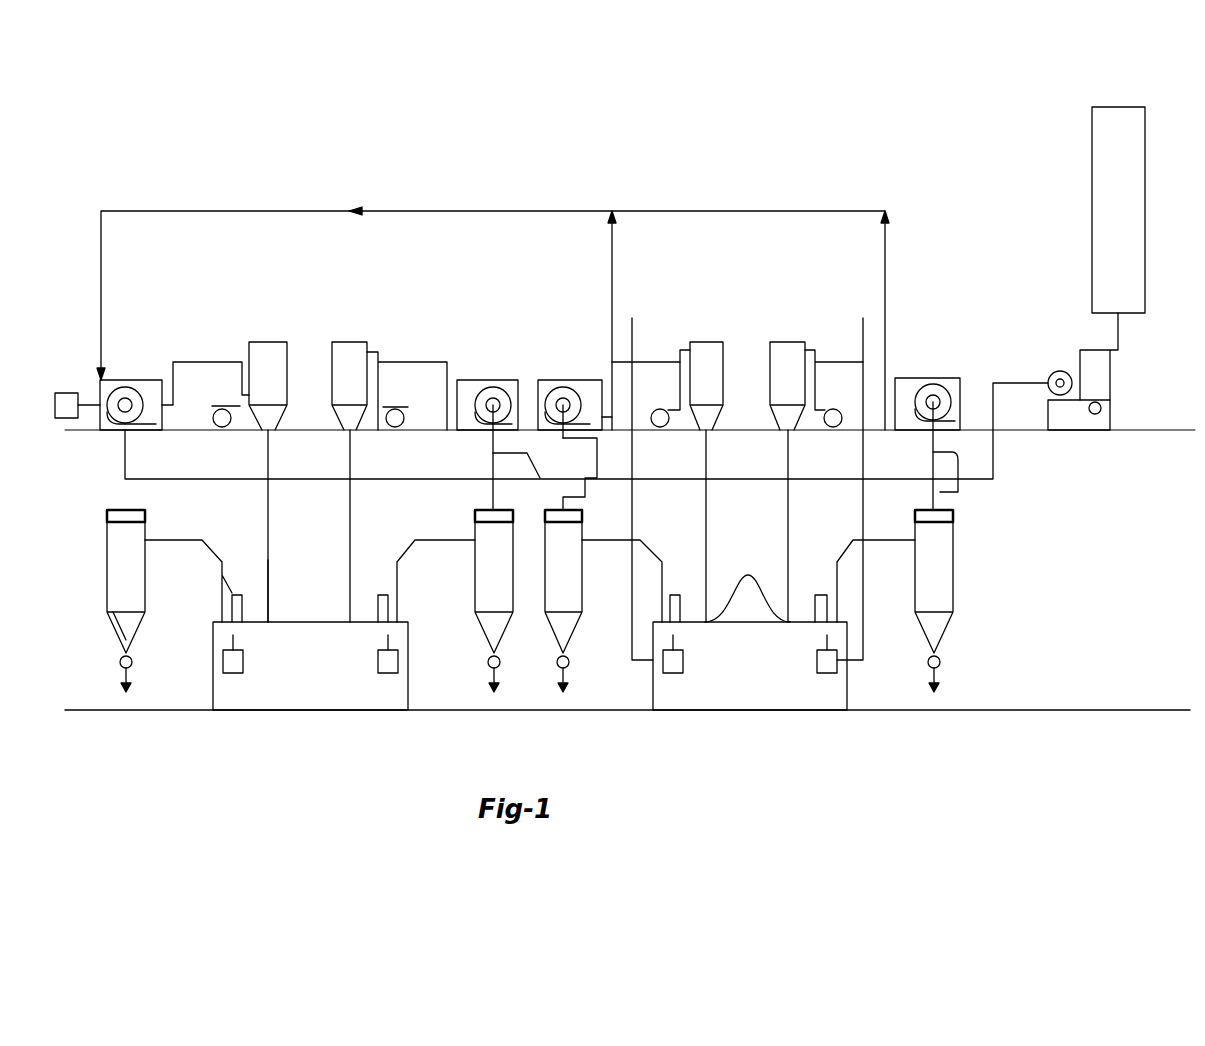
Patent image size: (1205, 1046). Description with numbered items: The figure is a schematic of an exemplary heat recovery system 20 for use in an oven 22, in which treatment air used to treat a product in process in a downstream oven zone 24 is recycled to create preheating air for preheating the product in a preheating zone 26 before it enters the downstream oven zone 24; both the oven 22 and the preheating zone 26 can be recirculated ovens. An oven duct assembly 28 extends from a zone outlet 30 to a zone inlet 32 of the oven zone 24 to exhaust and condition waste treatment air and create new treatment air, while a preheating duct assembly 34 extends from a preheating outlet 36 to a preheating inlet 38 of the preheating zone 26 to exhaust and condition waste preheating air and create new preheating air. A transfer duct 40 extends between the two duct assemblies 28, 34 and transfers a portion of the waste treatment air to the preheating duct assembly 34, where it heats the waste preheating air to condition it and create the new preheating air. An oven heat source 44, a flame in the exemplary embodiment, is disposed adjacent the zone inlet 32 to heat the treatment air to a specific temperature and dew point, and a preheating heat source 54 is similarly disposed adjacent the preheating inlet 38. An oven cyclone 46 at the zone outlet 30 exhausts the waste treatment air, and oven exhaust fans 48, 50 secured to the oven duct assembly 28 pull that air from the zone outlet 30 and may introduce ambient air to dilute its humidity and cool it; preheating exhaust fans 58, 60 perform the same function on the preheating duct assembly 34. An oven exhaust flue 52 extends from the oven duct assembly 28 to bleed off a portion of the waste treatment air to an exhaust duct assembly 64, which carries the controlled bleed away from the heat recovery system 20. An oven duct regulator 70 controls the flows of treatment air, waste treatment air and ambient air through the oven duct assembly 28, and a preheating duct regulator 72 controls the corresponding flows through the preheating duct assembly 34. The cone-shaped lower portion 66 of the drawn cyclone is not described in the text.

The heat recovery system 20 is at (967, 172).
The oven 22 is at (305, 690).
The downstream oven zone 24 is at (385, 690).
The preheating zone 26 is at (232, 690).
The oven duct assembly 28 is at (962, 550).
The zone outlet 30 is at (385, 595).
The zone inlet 32 is at (327, 612).
The preheating duct assembly 34 is at (100, 560).
The preheating outlet 36 is at (232, 595).
The preheating inlet 38 is at (280, 620).
The transfer duct 40 is at (450, 211).
The oven heat source 44 is at (350, 342).
The oven cyclone 46 is at (488, 625).
The oven exhaust fan 48 is at (563, 380).
The oven exhaust fan 50 is at (395, 432).
The oven exhaust flue 52 is at (493, 462).
The preheating heat source 54 is at (133, 478).
The preheating exhaust fan 58 is at (138, 382).
The preheating exhaust fan 60 is at (222, 408).
The exhaust duct assembly 64 is at (1145, 210).
The cone 66 is at (125, 625).
The oven duct regulator 70 is at (475, 516).
The preheating duct regulator 72 is at (107, 516).